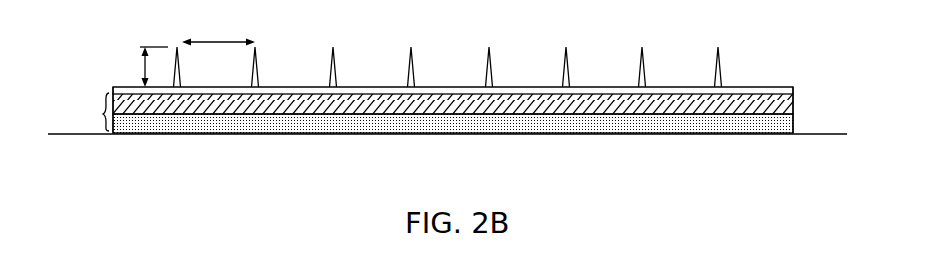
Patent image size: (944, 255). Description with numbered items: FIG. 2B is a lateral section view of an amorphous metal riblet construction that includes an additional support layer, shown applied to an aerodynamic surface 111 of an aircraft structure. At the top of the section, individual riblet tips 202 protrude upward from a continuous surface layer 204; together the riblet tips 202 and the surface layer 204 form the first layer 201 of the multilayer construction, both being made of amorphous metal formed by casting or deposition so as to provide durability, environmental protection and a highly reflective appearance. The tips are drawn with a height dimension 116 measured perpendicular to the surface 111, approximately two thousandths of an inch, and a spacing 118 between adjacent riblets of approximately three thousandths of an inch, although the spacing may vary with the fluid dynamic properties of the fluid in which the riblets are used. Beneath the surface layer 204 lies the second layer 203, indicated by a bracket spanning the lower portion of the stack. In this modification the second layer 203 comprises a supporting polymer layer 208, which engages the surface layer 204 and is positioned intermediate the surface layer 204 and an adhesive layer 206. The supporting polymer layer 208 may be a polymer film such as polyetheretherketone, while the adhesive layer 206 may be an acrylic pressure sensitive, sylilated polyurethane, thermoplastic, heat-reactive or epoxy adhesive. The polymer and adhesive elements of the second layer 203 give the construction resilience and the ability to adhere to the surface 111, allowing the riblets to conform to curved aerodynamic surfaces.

The surface 111 is at (77, 134).
The dimension 116 is at (138, 68).
The spacing 118 is at (203, 42).
The first layer 201 is at (802, 88).
The riblet tips 202 is at (415, 62).
The second layer 203 is at (96, 114).
The surface layer 204 is at (458, 87).
The adhesive layer 206 is at (777, 129).
The supporting polymer layer 208 is at (793, 97).